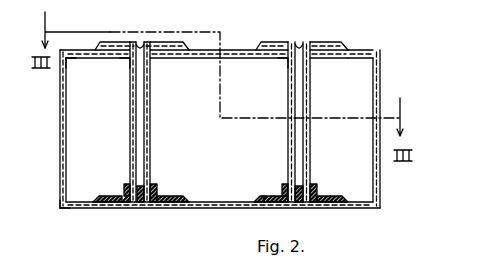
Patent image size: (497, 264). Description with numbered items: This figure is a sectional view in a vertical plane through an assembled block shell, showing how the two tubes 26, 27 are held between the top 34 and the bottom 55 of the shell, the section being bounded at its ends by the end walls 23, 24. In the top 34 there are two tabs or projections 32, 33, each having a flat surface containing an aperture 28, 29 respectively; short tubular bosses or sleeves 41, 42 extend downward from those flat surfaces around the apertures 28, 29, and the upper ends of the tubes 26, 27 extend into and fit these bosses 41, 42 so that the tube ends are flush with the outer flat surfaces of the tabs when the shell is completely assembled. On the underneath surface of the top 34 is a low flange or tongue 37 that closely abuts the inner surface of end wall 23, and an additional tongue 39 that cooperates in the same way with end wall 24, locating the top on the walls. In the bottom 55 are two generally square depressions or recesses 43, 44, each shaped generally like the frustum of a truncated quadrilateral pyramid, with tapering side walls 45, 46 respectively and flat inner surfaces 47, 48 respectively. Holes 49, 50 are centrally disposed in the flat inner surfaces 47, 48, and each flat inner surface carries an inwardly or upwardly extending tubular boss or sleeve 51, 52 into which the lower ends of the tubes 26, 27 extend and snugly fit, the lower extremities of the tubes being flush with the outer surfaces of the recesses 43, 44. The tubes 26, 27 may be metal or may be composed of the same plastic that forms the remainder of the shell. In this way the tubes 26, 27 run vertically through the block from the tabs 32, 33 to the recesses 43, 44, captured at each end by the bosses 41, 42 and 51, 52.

The end wall 23 is at (60, 125).
The end wall 24 is at (380, 183).
The plastic tube 26 is at (150, 129).
The plastic tube 27 is at (288, 146).
The aperture 28 is at (140, 41).
The aperture 29 is at (302, 42).
The tab 32 is at (116, 42).
The tab 33 is at (273, 42).
The top 34 is at (236, 49).
The tongue 37 is at (66, 62).
The tongue 39 is at (365, 67).
The tubular boss 41 is at (129, 60).
The tubular boss 42 is at (288, 61).
The recess 43 is at (103, 204).
The recess 44 is at (333, 205).
The tapering side wall 45 is at (185, 197).
The tapering side wall 46 is at (256, 196).
The flat inner surface 47 is at (125, 203).
The flat inner surface 48 is at (281, 196).
The hole 49 is at (147, 204).
The hole 50 is at (295, 209).
The tubular boss 51 is at (128, 182).
The tubular boss 52 is at (313, 192).
The bottom 55 is at (70, 206).